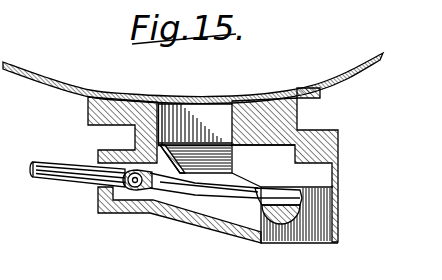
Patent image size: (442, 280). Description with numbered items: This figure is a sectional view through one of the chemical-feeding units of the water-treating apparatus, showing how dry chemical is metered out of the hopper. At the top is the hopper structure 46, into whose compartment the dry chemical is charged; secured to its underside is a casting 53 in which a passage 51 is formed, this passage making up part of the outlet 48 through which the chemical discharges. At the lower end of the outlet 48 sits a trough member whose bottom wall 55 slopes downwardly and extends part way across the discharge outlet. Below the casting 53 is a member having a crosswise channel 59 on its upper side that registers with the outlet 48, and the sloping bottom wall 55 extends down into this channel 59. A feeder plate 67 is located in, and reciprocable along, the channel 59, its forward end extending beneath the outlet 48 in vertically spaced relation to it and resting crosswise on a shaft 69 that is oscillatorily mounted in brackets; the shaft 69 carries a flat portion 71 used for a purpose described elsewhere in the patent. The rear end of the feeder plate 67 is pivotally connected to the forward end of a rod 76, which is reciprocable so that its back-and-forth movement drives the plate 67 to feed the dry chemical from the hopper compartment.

The hopper structure 46 is at (356, 72).
The outlet 48 is at (205, 118).
The passage 51 is at (173, 117).
The casting 53 is at (86, 108).
The bottom wall 55 is at (263, 166).
The channel 59 is at (163, 198).
The feeder plate 67 is at (226, 189).
The shaft 69 is at (278, 220).
The flat portion 71 is at (302, 200).
The rod 76 is at (53, 163).